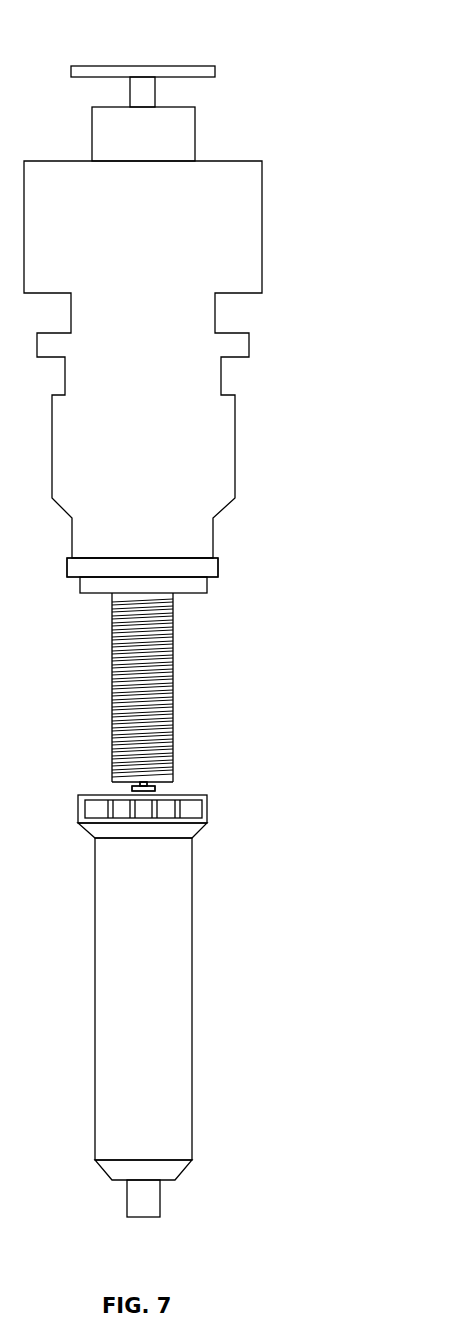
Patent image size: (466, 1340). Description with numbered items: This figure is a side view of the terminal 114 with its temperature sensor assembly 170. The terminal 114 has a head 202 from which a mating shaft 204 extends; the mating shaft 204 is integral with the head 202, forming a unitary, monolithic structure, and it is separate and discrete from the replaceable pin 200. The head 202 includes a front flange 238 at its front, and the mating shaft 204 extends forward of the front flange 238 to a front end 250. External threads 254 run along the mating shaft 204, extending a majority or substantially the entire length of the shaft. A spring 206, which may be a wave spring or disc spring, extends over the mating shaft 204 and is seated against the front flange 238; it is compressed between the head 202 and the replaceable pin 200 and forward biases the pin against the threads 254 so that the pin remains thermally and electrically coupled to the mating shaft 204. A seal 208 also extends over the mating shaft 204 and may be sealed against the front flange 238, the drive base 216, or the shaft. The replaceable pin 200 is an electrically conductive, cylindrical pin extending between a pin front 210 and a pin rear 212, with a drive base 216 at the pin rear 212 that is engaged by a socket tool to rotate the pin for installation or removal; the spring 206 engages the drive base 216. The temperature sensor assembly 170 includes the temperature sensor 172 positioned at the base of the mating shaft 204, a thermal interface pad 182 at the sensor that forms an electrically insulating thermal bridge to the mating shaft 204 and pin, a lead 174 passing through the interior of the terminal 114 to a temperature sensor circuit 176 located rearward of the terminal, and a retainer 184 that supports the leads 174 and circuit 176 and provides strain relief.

The terminal 114 is at (253, 130).
The temperature sensor assembly 170 is at (198, 41).
The temperature sensor circuit 176 is at (100, 66).
The lead 174 is at (155, 88).
The retainer 184 is at (92, 135).
The head 202 is at (220, 492).
The front flange 238 is at (187, 565).
The seal 208 is at (198, 568).
The spring 206 is at (195, 593).
The mating shaft 204 is at (150, 725).
The threads 254 is at (177, 760).
The front end 250 is at (173, 782).
The pin rear 212 is at (95, 795).
The drive base 216 is at (196, 808).
The temperature sensor 172 is at (143, 792).
The thermal interface pad 182 is at (163, 790).
The replaceable pin 200 is at (185, 958).
The pin front 210 is at (142, 1217).